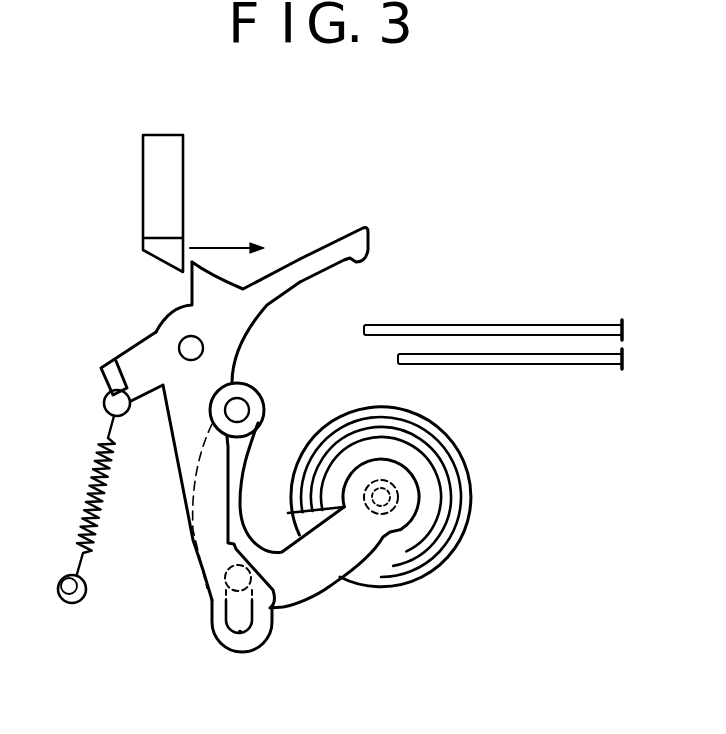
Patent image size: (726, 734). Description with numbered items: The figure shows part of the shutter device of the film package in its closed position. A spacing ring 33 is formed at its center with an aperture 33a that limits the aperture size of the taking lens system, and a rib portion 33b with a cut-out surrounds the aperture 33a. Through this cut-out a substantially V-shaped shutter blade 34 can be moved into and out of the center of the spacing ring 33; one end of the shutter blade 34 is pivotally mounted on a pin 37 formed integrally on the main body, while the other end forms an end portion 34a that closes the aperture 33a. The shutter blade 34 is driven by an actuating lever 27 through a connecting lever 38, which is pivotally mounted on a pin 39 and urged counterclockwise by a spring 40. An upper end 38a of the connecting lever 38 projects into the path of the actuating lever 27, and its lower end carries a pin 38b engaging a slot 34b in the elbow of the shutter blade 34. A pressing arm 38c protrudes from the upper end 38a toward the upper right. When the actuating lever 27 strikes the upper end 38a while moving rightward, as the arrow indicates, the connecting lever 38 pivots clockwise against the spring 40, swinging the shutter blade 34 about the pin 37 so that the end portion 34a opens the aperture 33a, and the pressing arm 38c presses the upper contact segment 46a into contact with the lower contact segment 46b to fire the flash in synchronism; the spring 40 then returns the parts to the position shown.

The actuating lever 27 is at (186, 177).
The spacing ring 33 is at (472, 514).
The aperture 33a is at (400, 495).
The rib portion 33b is at (440, 547).
The shutter blade 34 is at (327, 597).
The end portion 34a is at (406, 466).
The slot 34b is at (240, 632).
The pin 37 is at (243, 410).
The connecting lever 38 is at (156, 332).
The upper end 38a is at (192, 283).
The pin 38b is at (212, 614).
The pressing arm 38c is at (352, 230).
The pin 39 is at (204, 347).
The spring 40 is at (90, 480).
The contact segment 46a is at (578, 327).
The contact segment 46b is at (588, 363).